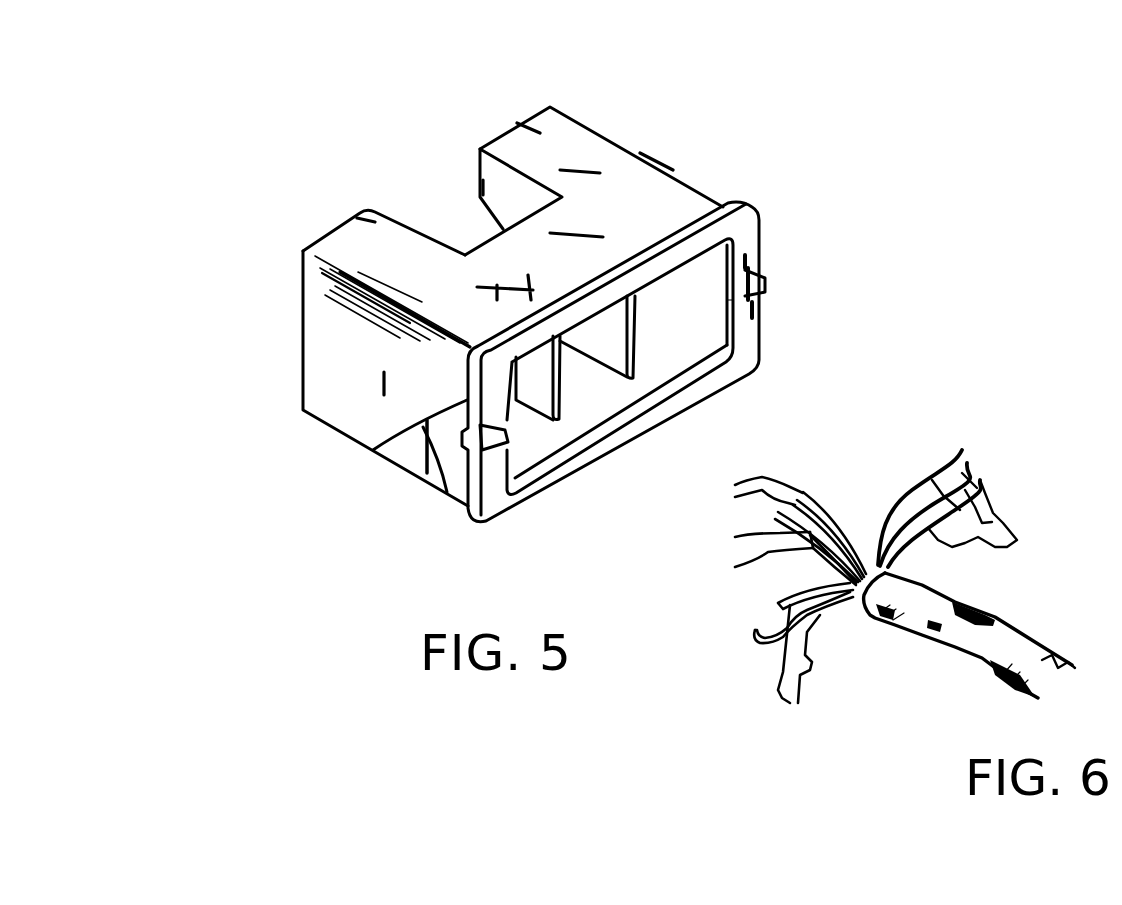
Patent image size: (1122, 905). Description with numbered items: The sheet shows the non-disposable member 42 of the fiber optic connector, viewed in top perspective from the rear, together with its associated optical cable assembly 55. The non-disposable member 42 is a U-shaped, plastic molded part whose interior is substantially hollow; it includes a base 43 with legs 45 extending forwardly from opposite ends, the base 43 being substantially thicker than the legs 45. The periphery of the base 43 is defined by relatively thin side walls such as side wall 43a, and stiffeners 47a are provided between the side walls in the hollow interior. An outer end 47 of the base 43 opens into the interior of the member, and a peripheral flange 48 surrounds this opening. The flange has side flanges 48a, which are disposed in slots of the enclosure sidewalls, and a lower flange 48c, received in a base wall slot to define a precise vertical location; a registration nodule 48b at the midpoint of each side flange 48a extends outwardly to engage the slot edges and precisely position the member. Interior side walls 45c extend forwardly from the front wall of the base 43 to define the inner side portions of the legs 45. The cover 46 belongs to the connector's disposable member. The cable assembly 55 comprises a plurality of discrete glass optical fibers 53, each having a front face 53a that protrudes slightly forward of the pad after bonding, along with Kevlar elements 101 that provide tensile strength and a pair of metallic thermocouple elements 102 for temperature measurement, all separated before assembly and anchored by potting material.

In FIG. 5, the non-disposable member 42 is at (596, 112).
In FIG. 5, the base 43 is at (566, 265).
In FIG. 5, the side wall 43a is at (515, 403).
In FIG. 5, the legs 45 is at (343, 357).
In FIG. 5, the interior side wall 45c is at (480, 190).
In FIG. 5, the cover 46 is at (768, 352).
In FIG. 5, the outer end 47 is at (562, 405).
In FIG. 5, the stiffeners 47a is at (742, 342).
In FIG. 5, the peripheral flange 48 is at (663, 212).
In FIG. 5, the side flange 48a is at (748, 207).
In FIG. 5, the registration nodule 48b is at (767, 285).
In FIG. 5, the lower flange 48c is at (625, 441).
In FIG. 6, the optical fibers 53 is at (735, 552).
In FIG. 6, the front face 53a is at (735, 490).
In FIG. 6, the optical cable assembly 55 is at (1010, 607).
In FIG. 6, the Kevlar elements 101 is at (971, 508).
In FIG. 6, the thermocouple elements 102 is at (803, 668).